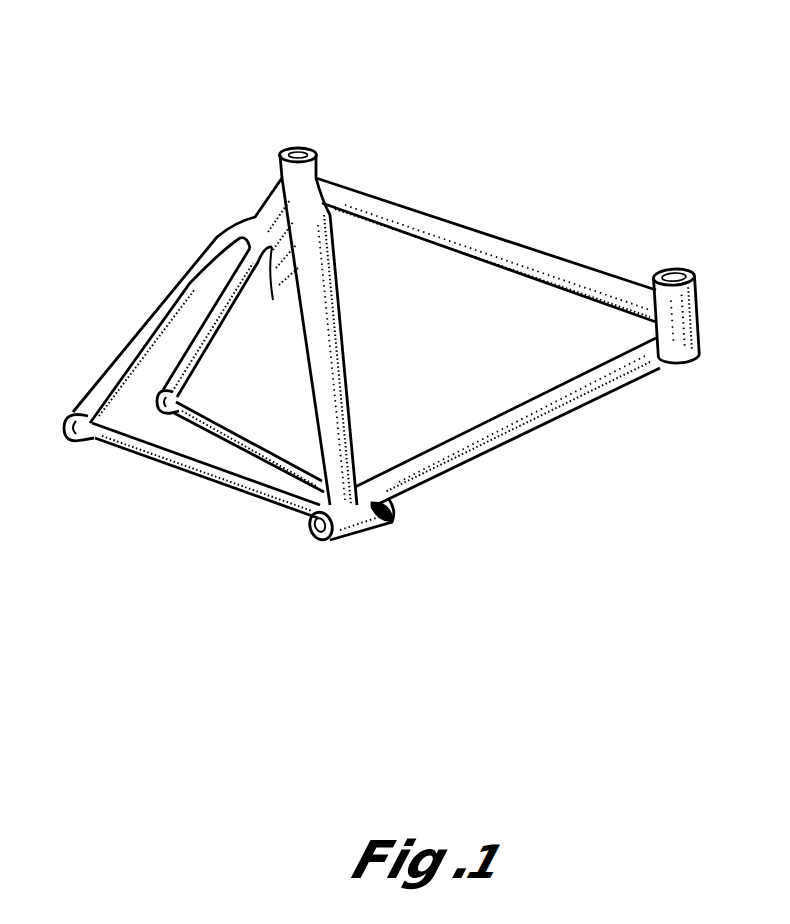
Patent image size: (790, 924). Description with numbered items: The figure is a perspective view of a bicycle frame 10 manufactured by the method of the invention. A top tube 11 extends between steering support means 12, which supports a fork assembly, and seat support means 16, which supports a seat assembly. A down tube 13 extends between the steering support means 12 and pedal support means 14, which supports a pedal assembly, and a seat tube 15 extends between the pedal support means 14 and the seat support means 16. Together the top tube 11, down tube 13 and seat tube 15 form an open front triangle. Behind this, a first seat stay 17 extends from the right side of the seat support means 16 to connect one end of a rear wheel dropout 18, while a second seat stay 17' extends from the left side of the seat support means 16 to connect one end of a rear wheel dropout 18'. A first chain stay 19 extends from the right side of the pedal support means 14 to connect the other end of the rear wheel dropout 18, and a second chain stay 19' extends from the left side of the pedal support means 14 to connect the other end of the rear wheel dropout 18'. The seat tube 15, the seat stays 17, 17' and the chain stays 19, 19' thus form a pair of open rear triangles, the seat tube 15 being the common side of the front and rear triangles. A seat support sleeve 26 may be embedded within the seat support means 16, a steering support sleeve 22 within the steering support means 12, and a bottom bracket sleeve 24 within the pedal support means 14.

The bicycle frame 10 is at (187, 193).
The top tube 11 is at (494, 250).
The steering support means 12 is at (697, 362).
The down tube 13 is at (528, 422).
The pedal support means 14 is at (358, 522).
The seat tube 15 is at (341, 346).
The seat support means 16 is at (325, 178).
The first seat stay 17 is at (177, 300).
The second seat stay 17' is at (218, 322).
The rear wheel dropout 18 is at (60, 420).
The rear wheel dropout 18' is at (206, 386).
The first chain stay 19 is at (206, 498).
The second chain stay 19' is at (249, 442).
The steering support sleeve 22 is at (674, 268).
The bottom bracket sleeve 24 is at (315, 541).
The seat support sleeve 26 is at (296, 148).